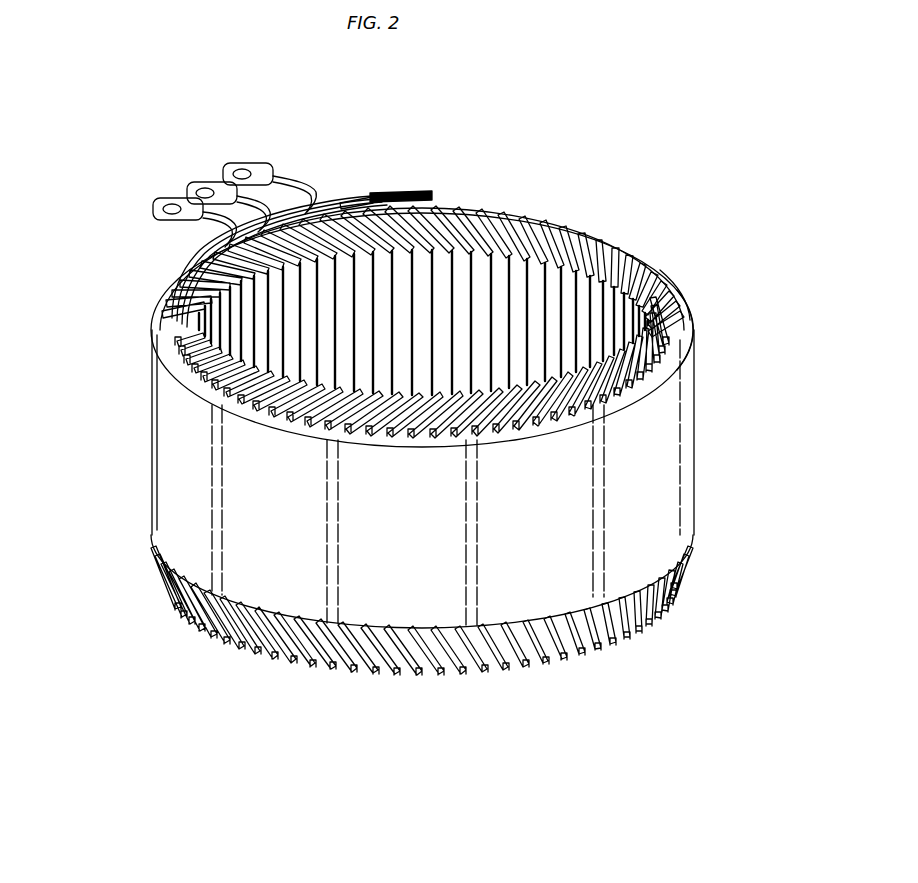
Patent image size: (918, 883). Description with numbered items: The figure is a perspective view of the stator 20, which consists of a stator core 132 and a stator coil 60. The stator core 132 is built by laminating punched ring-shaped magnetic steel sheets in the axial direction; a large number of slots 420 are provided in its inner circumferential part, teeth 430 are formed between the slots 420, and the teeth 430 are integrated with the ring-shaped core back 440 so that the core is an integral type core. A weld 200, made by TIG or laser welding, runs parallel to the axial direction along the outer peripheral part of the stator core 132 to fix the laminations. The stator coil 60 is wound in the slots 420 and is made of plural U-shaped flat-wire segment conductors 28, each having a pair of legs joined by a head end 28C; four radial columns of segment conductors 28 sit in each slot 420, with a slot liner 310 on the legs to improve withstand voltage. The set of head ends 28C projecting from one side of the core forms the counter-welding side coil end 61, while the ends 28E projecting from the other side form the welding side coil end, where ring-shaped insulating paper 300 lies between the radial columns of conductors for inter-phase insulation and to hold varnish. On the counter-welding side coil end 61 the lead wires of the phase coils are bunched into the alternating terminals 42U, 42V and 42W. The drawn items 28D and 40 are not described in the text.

The stator 20 is at (434, 491).
The segment conductor 28 is at (474, 436).
The head end 28C is at (479, 241).
The coil end portion 28D is at (648, 614).
The end 28E is at (580, 650).
The bus bar 40 is at (268, 200).
The alternating terminal 42U is at (163, 210).
The alternating terminal 42V is at (200, 188).
The alternating terminal 42W is at (236, 167).
The stator coil 60 is at (183, 367).
The counter-welding side coil end 61 is at (677, 315).
The stator core 132 is at (183, 472).
The weld 200 is at (434, 491).
The insulating paper 300 is at (474, 436).
The slot liner 310 is at (578, 212).
The slot 420 is at (380, 205).
The tooth 430 is at (405, 203).
The core back 440 is at (683, 337).